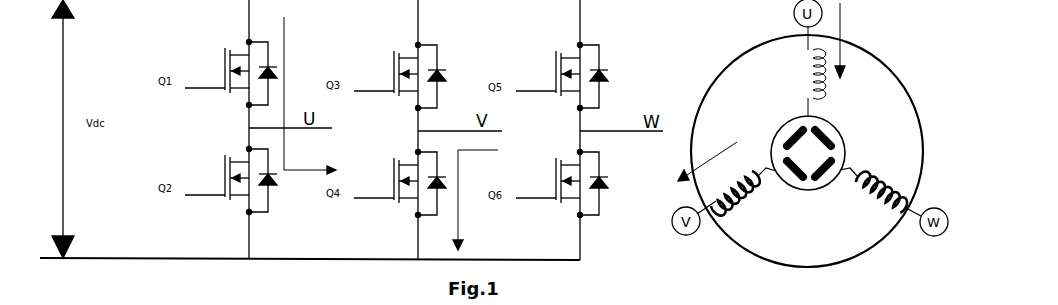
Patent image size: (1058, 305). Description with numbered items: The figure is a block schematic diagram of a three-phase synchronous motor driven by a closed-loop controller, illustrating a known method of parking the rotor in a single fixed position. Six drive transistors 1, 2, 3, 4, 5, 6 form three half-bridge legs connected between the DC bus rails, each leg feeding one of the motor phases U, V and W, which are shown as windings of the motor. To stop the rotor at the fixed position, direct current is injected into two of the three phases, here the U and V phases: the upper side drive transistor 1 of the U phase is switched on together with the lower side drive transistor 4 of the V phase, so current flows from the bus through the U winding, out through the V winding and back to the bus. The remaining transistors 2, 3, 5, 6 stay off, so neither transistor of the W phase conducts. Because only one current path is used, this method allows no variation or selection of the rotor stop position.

The upper side drive transistor 1 is at (231, 74).
The second switching transistor (U-phase low side) 2 is at (231, 181).
The third switching transistor (V-phase high side) 3 is at (400, 77).
The lower side drive transistor 4 is at (400, 184).
The fifth switching transistor (W-phase high side) 5 is at (562, 77).
The sixth switching transistor (W-phase low side) 6 is at (562, 184).